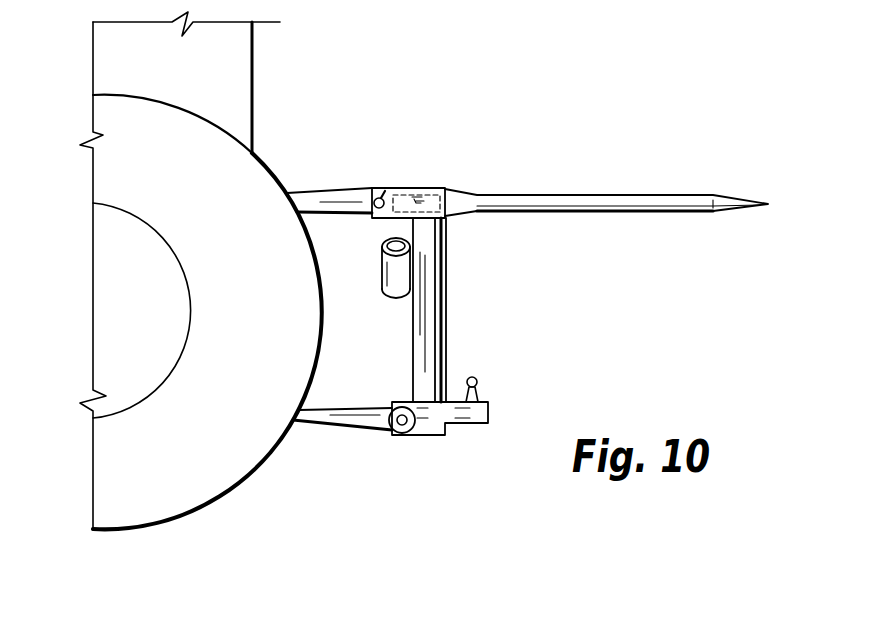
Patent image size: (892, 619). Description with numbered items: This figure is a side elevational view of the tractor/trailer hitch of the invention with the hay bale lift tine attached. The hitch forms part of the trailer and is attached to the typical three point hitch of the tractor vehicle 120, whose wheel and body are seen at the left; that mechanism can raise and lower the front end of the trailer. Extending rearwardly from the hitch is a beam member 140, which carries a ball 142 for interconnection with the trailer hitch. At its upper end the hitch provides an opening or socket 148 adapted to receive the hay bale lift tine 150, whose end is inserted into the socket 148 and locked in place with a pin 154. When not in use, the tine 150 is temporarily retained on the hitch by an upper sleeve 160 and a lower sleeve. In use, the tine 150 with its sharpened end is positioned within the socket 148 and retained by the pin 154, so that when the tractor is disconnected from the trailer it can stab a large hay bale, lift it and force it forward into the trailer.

The tractor vehicle 120 is at (272, 120).
The beam member 140 is at (480, 411).
The ball 142 is at (477, 376).
The opening (socket) 148 is at (430, 195).
The hay bale lift tine 150 is at (601, 179).
The pin 154 is at (378, 197).
The upper sleeve 160 is at (398, 275).